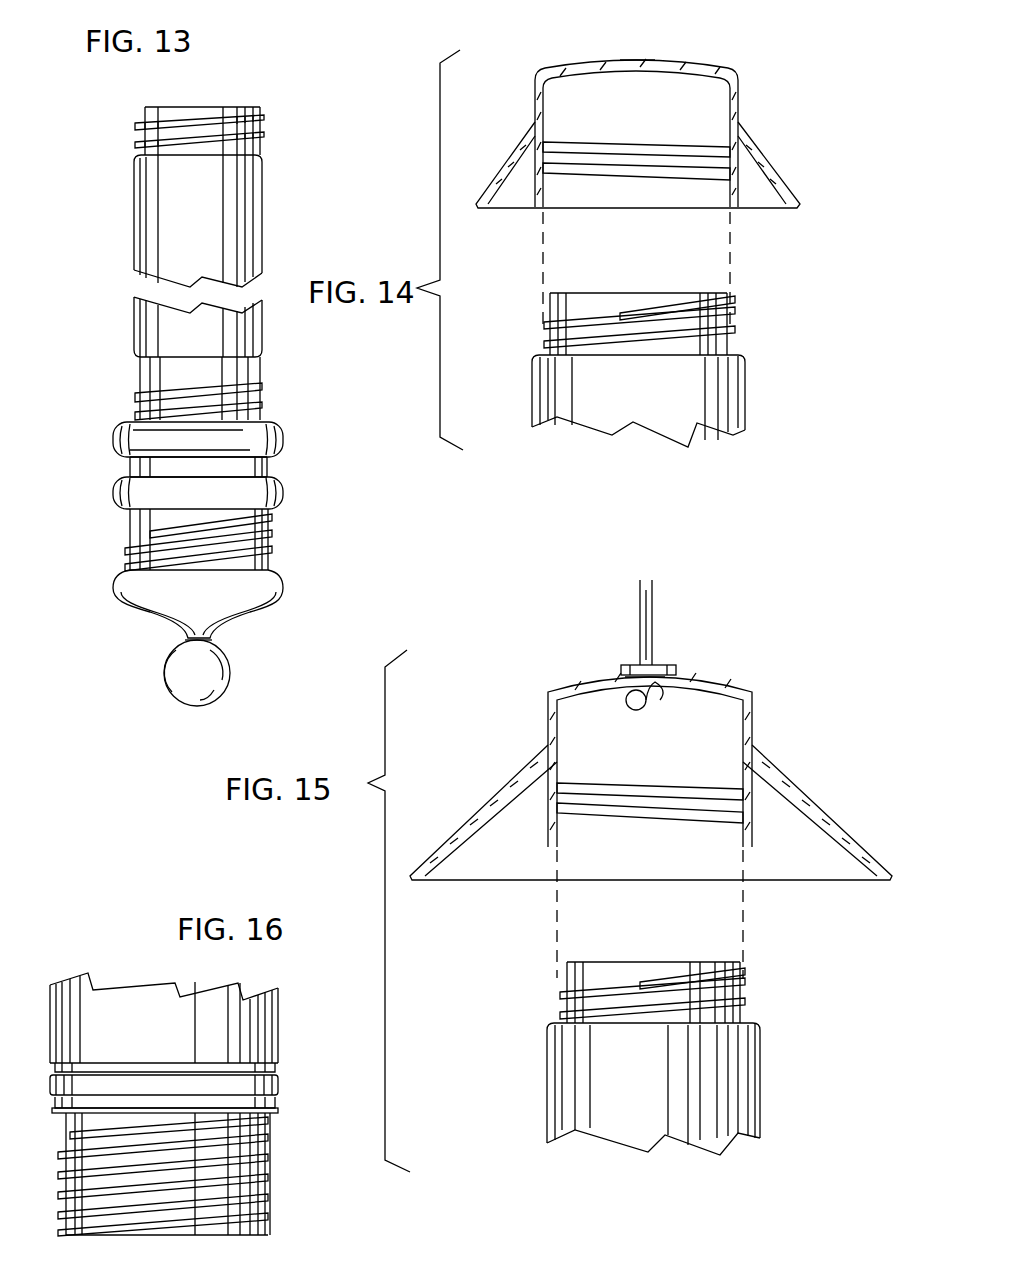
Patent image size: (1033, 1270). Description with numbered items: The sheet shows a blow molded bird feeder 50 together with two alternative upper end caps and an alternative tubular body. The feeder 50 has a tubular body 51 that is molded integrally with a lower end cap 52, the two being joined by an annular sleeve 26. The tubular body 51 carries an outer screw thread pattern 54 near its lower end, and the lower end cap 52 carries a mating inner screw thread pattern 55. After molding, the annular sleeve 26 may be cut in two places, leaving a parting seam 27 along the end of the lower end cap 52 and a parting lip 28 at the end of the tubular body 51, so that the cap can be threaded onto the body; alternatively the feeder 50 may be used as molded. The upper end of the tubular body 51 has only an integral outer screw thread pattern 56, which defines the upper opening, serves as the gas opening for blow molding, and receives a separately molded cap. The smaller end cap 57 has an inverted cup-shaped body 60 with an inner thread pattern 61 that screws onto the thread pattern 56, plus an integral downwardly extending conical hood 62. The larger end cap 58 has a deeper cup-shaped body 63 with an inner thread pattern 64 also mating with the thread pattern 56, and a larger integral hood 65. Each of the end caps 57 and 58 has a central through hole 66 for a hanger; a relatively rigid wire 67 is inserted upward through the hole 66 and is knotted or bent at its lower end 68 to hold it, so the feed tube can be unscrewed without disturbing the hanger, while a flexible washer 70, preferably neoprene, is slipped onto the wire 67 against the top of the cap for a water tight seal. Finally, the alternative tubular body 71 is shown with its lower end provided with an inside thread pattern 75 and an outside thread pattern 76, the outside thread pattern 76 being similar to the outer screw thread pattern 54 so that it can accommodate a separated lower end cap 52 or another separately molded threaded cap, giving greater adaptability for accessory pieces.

In FIG. 13, the annular sleeve 26 is at (255, 520).
In FIG. 13, the parting seam 27 is at (125, 512).
In FIG. 13, the parting lip 28 is at (268, 422).
In FIG. 13, the bird feeder 50 is at (108, 438).
In FIG. 13, the tubular body 51 is at (150, 318).
In FIG. 14, the tubular body 51 is at (735, 410).
In FIG. 15, the tubular body 51 is at (735, 1085).
In FIG. 13, the lower end cap 52 is at (147, 600).
In FIG. 13, the outer screw thread pattern 54 is at (175, 390).
In FIG. 13, the inner screw thread pattern 55 is at (272, 530).
In FIG. 13, the outer screw thread pattern 56 is at (262, 138).
In FIG. 14, the outer screw thread pattern 56 is at (730, 302).
In FIG. 15, the outer screw thread pattern 56 is at (742, 988).
In FIG. 14, the end cap 57 is at (631, 117).
In FIG. 15, the end cap 58 is at (651, 730).
In FIG. 14, the cup-shaped body 60 is at (738, 104).
In FIG. 14, the inner thread pattern 61 is at (628, 142).
In FIG. 14, the conical hood 62 is at (510, 160).
In FIG. 15, the cup-shaped body 63 is at (548, 712).
In FIG. 15, the inner thread pattern 64 is at (615, 790).
In FIG. 15, the hood 65 is at (500, 795).
In FIG. 14, the central through hole 66 is at (640, 62).
In FIG. 15, the central through hole 66 is at (645, 678).
In FIG. 15, the wire 67 is at (655, 617).
In FIG. 15, the lower end 68 is at (640, 712).
In FIG. 15, the flexible washer 70 is at (663, 665).
In FIG. 16, the tubular body 71 is at (48, 1020).
In FIG. 16, the inside thread pattern 75 is at (270, 1130).
In FIG. 16, the outside thread pattern 76 is at (270, 1191).